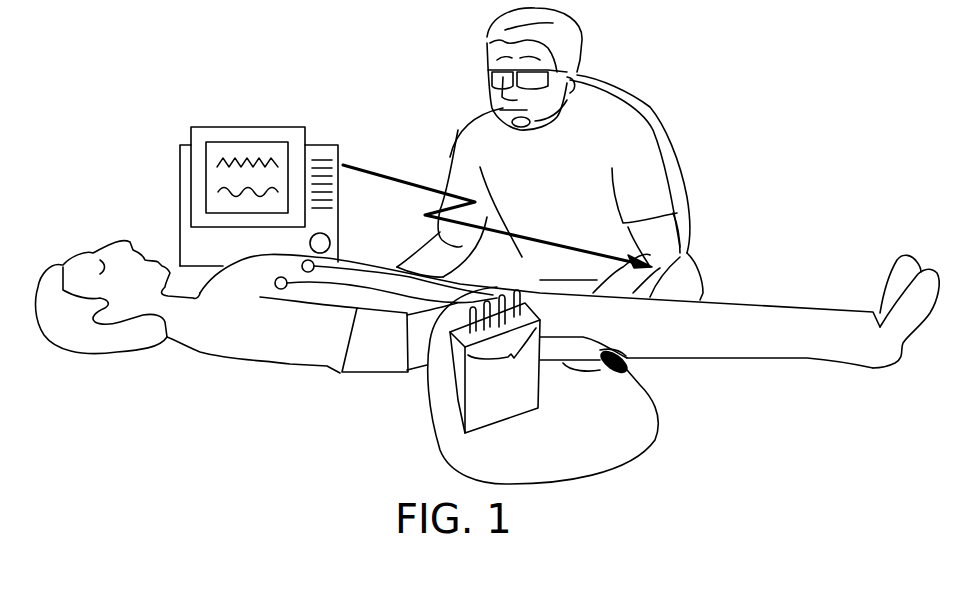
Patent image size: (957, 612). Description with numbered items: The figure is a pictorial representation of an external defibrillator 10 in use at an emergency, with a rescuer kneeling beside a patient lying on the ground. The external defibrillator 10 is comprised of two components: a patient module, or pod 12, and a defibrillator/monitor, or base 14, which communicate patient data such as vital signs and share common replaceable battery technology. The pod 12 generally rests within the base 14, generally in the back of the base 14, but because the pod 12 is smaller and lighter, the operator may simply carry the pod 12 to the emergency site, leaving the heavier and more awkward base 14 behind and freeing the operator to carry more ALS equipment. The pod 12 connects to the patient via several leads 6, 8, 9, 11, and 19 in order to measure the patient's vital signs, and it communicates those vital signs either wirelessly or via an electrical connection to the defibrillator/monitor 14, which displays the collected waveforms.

The external defibrillator 10 is at (115, 107).
The defibrillator/monitor (base) 14 is at (313, 142).
The lead 19 is at (370, 273).
The lead 9 is at (493, 285).
The lead 8 is at (388, 344).
The lead 11 is at (454, 359).
The patient module (pod) 12 is at (453, 418).
The lead 6 is at (623, 467).